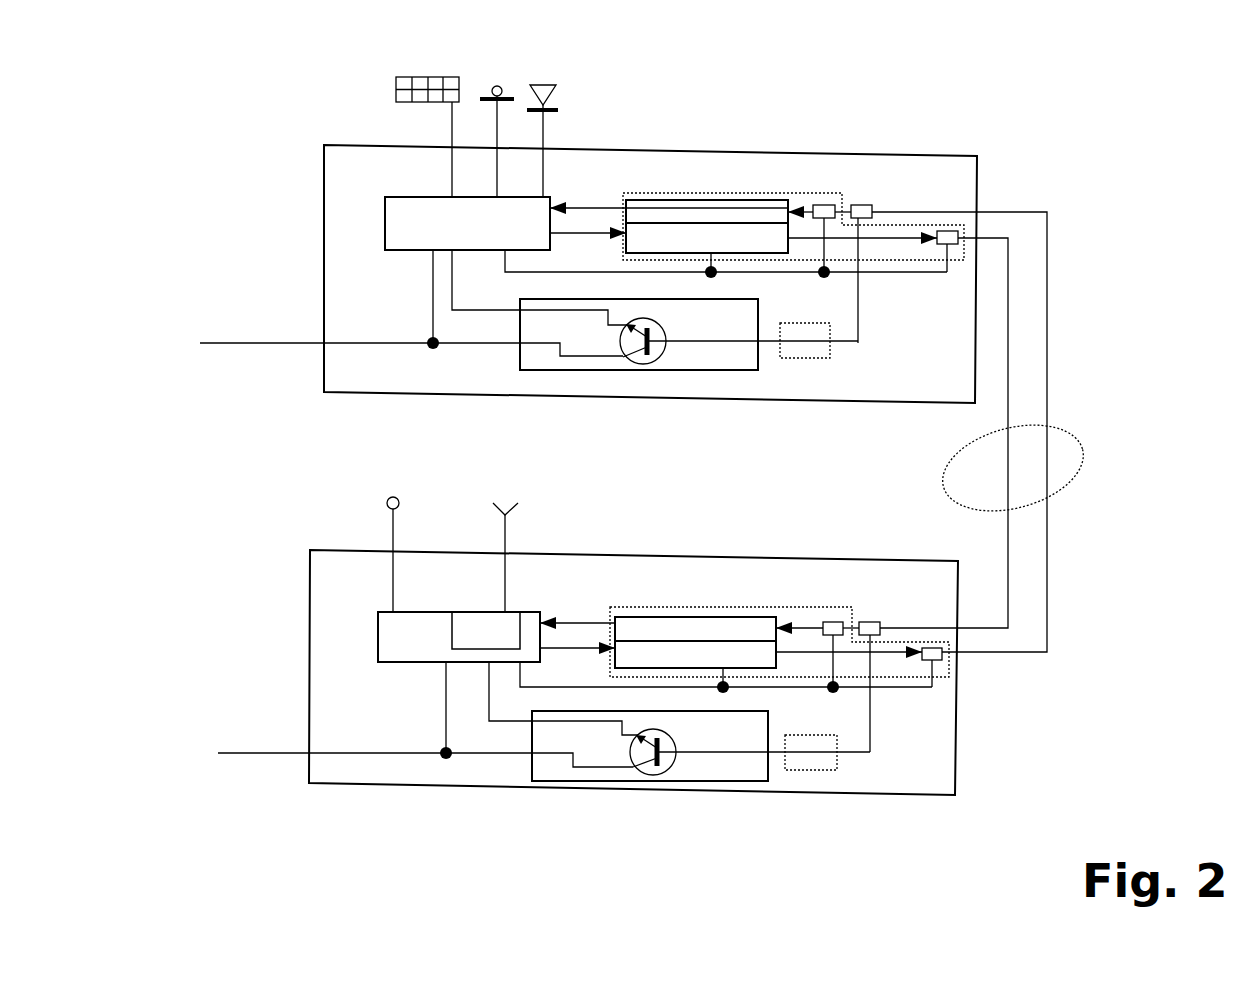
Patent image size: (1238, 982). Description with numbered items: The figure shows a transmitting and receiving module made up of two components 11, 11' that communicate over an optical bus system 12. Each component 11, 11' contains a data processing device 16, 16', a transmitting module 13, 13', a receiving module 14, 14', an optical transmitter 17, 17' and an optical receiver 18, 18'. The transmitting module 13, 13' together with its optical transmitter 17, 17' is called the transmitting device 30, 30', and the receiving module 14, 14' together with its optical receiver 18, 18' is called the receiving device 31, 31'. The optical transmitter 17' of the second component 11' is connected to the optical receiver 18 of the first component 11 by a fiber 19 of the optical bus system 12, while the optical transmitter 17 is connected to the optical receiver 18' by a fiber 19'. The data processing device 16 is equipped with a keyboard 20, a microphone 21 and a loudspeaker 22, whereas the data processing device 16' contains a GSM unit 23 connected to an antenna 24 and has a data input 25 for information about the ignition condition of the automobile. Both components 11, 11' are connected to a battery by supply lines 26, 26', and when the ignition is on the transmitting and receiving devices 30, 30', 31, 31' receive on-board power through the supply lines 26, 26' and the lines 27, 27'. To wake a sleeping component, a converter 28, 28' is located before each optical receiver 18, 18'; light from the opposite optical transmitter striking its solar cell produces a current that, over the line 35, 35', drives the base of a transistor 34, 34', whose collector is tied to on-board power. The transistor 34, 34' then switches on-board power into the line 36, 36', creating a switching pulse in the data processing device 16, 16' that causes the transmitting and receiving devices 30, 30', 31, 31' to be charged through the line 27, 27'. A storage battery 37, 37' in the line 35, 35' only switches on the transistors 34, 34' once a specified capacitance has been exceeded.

The component 11 is at (669, 228).
The component 11' is at (687, 695).
The optical bus system 12 is at (1087, 452).
The transmitting module 13 is at (669, 160).
The transmitting module 13' is at (658, 565).
The receiving module 14 is at (669, 150).
The receiving module 14' is at (658, 575).
The data processing device 16 is at (467, 223).
The data processing device 16' is at (459, 637).
The optical transmitter 17 is at (924, 191).
The optical transmitter 17' is at (956, 672).
The optical receiver 18 is at (819, 163).
The optical receiver 18' is at (899, 572).
The fiber 19 is at (1040, 432).
The fiber 19' is at (1040, 420).
The keyboard 20 is at (397, 92).
The microphone 21 is at (498, 85).
The loudspeaker 22 is at (553, 100).
The GSM unit 23 is at (510, 623).
The antenna 24 is at (500, 537).
The data input 25 is at (388, 498).
The supply line 26 is at (411, 332).
The supply line 26' is at (406, 745).
The line 27 is at (579, 259).
The line 27' is at (575, 655).
The converter 28 is at (876, 150).
The converter 28' is at (817, 588).
The transmitting device 30 is at (1014, 136).
The transmitting device 30' is at (991, 720).
The receiving device 31 is at (793, 175).
The receiving device 31' is at (779, 587).
The transistor 34 is at (689, 373).
The transistor 34' is at (701, 786).
The line 35 is at (878, 334).
The line 35' is at (919, 755).
The line 36 is at (449, 287).
The line 36' is at (443, 698).
The storage battery 37 is at (795, 389).
The storage battery 37' is at (790, 803).